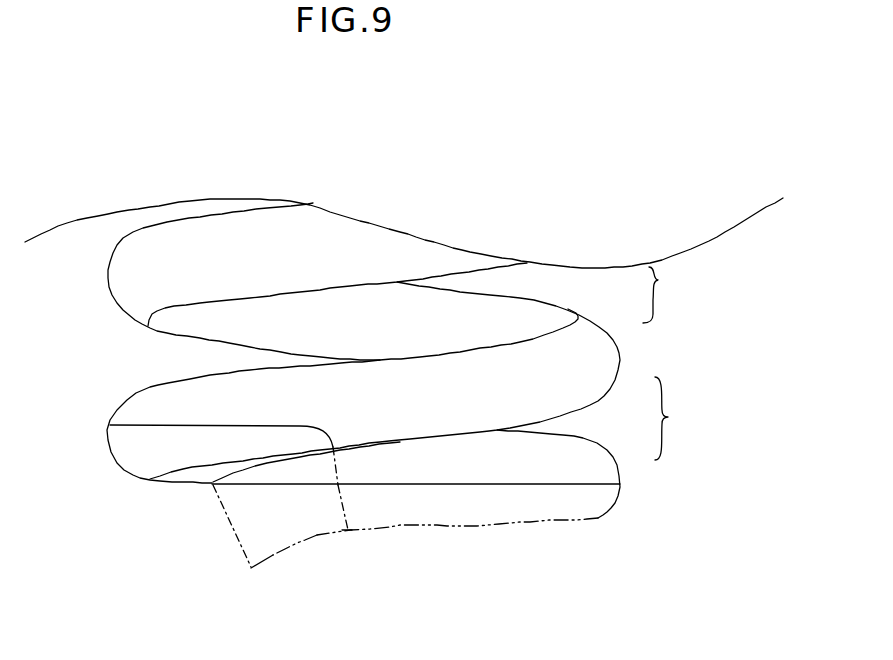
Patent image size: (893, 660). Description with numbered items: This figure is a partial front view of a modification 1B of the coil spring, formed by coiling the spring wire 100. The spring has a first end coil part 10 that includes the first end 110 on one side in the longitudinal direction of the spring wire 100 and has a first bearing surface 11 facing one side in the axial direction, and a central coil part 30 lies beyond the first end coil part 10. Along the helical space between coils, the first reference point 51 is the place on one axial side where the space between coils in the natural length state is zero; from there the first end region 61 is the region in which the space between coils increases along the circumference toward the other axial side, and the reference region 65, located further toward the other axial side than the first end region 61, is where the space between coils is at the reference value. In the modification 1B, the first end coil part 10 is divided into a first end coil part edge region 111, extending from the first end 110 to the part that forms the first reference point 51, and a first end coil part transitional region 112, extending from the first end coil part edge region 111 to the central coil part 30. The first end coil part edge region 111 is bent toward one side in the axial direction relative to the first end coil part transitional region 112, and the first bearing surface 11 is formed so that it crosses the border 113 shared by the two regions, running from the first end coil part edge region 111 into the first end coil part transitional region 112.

The coil spring modification 1B is at (579, 167).
The central coil part 30 is at (715, 264).
The spring wire 100 is at (147, 287).
The reference region 65 is at (666, 295).
The first end region 61 is at (676, 418).
The first reference point 51 is at (110, 425).
The first end coil part 10 is at (650, 475).
The first bearing surface 11 is at (412, 488).
The first end 110 is at (232, 530).
The first end coil part edge region 111 is at (270, 538).
The first end coil part transitional region 112 is at (543, 463).
The border 113 is at (342, 502).